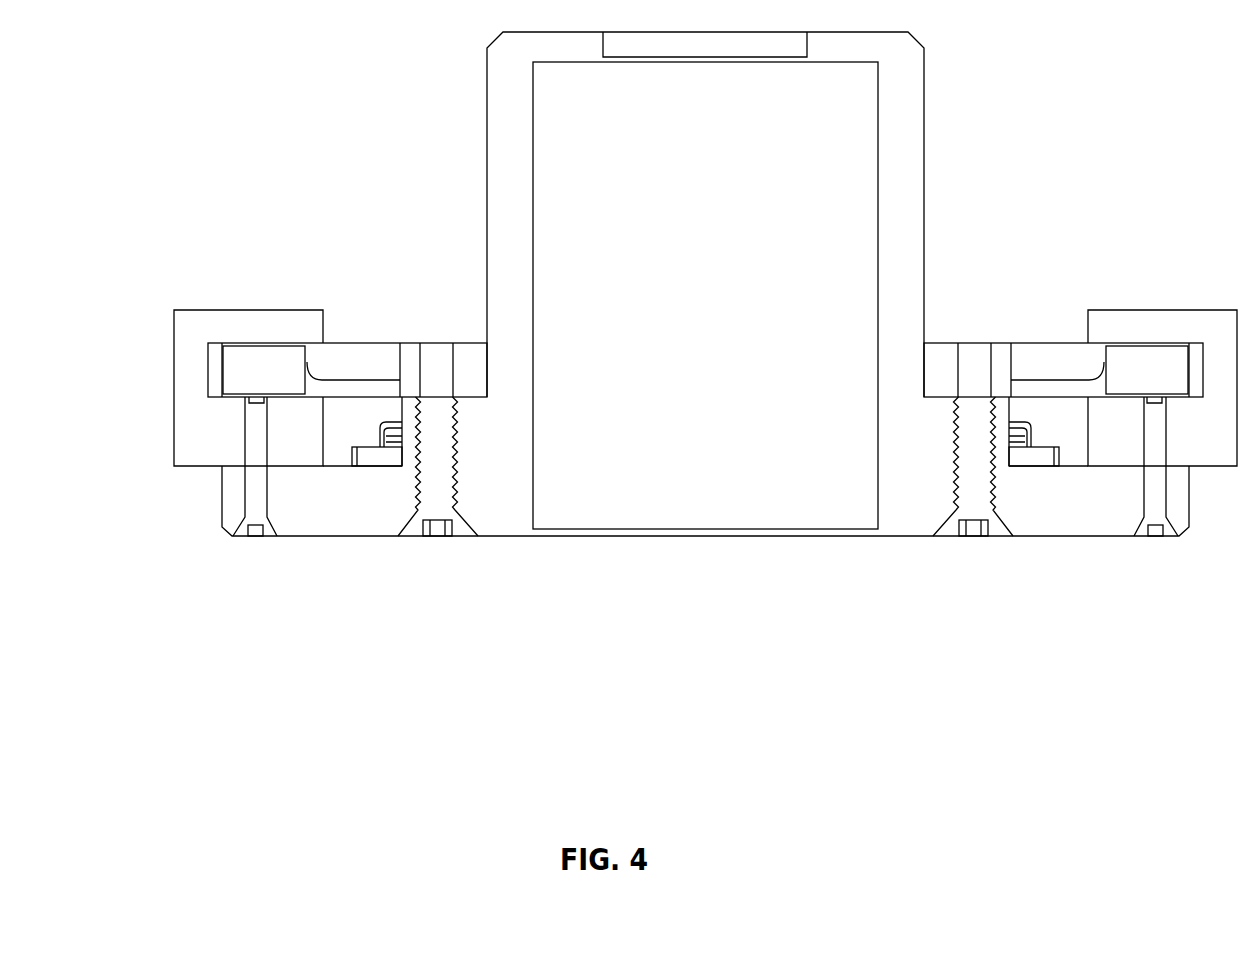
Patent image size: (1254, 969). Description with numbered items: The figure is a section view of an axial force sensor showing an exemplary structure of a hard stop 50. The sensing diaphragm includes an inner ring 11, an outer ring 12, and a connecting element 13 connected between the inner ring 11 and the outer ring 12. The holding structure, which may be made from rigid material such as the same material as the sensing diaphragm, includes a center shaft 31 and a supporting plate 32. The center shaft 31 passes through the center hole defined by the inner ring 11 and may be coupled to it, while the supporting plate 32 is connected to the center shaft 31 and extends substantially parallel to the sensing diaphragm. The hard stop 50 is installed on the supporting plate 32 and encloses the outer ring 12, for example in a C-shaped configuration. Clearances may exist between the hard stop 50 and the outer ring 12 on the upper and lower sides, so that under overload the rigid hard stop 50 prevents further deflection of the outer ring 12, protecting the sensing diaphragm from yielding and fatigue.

The inner ring 11 is at (410, 360).
The outer ring 12 is at (252, 365).
The connecting element 13 is at (353, 378).
The center shaft 31 is at (533, 290).
The supporting plate 32 is at (373, 503).
The hard stop 50 is at (196, 420).